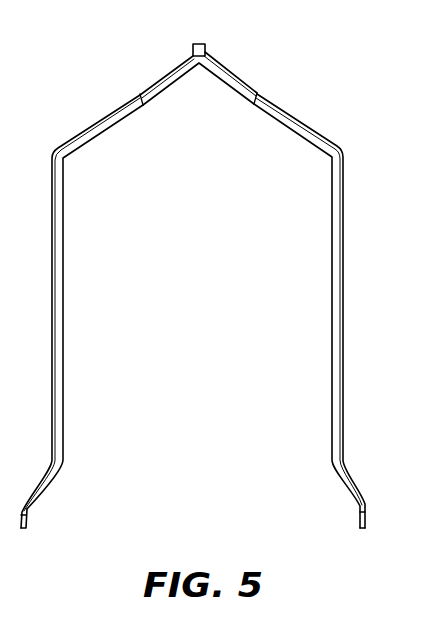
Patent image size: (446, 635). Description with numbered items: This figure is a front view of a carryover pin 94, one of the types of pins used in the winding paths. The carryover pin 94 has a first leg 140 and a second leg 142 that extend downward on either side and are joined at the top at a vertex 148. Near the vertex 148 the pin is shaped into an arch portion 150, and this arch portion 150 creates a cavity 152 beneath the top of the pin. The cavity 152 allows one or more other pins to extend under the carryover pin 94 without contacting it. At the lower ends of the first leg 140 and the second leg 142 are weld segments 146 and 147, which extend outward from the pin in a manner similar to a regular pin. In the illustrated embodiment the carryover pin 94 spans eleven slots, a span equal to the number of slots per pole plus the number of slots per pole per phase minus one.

The carryover pin 94 is at (318, 72).
The first leg 140 is at (340, 300).
The second leg 142 is at (62, 310).
The weld segment 146 is at (355, 500).
The weld segment 147 is at (30, 498).
The vertex 148 is at (198, 44).
The arch portion 150 is at (230, 72).
The cavity 152 is at (200, 90).